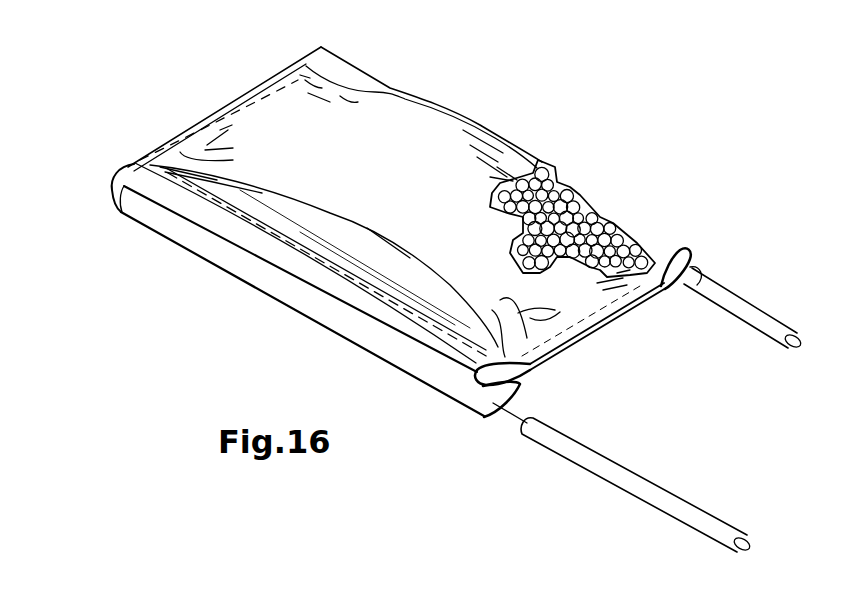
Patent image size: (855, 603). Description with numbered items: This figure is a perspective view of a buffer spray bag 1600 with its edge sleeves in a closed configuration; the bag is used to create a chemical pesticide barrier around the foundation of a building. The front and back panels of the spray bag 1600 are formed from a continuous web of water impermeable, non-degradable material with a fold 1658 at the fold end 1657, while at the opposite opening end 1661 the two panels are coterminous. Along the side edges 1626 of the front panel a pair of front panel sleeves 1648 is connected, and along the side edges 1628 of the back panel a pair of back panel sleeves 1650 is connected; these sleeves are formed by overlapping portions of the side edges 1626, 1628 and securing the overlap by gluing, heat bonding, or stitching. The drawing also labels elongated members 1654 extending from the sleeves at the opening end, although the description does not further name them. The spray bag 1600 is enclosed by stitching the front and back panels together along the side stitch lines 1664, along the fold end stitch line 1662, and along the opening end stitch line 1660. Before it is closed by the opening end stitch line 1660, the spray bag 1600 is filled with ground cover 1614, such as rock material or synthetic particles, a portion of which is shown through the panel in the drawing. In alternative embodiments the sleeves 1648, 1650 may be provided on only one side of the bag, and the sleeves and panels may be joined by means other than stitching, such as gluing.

The buffer spray bag 1600 is at (532, 70).
The ground cover 1614 is at (572, 200).
The side edges 1626 is at (169, 224).
The side edges 1628 is at (435, 404).
The front panel sleeves 1648 is at (237, 230).
The back panel sleeves 1650 is at (405, 357).
The rods 1654 is at (763, 336).
The fold end 1657 is at (260, 67).
The fold 1658 is at (113, 180).
The opening end stitch line 1660 is at (633, 307).
The opening end 1661 is at (574, 357).
The fold end stitch line 1662 is at (260, 108).
The side stitch lines 1664 is at (335, 268).